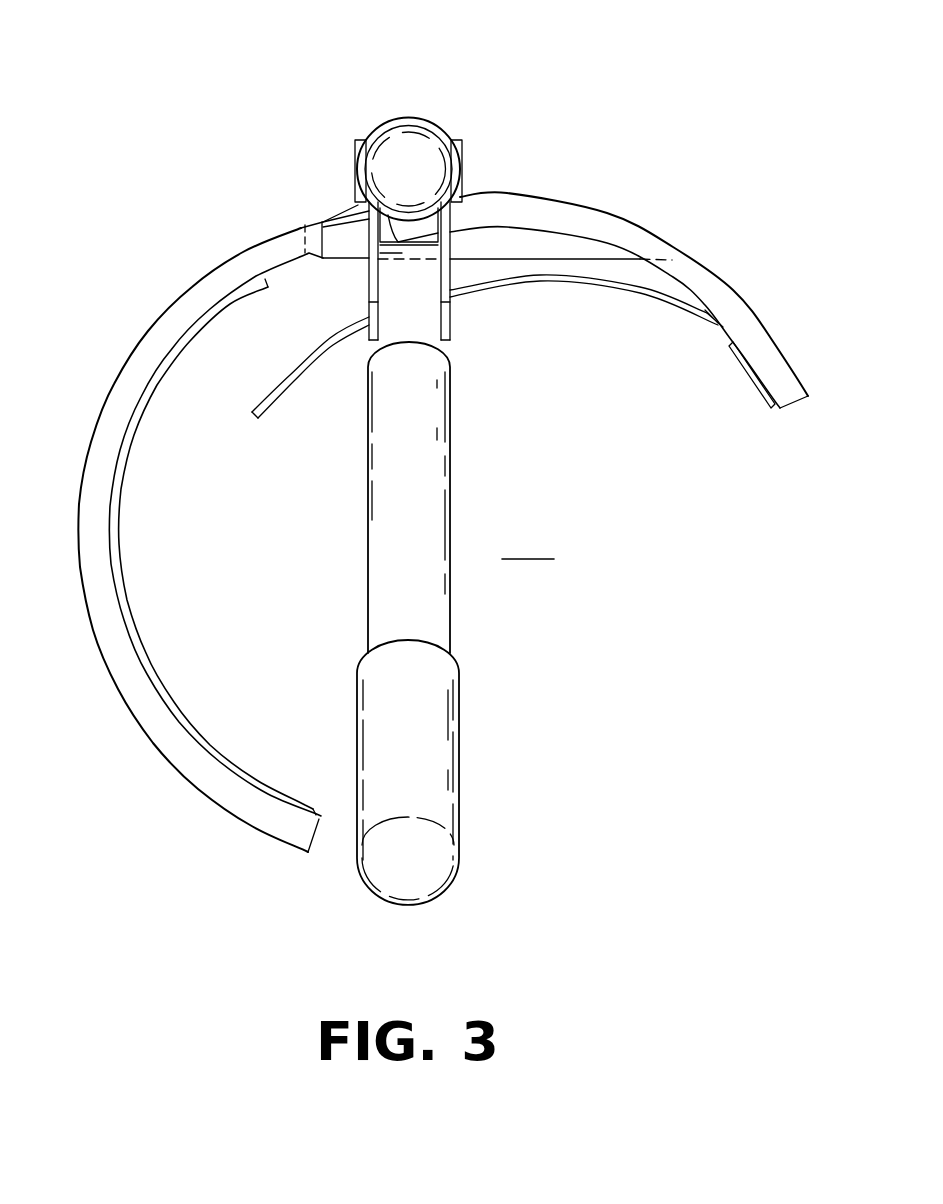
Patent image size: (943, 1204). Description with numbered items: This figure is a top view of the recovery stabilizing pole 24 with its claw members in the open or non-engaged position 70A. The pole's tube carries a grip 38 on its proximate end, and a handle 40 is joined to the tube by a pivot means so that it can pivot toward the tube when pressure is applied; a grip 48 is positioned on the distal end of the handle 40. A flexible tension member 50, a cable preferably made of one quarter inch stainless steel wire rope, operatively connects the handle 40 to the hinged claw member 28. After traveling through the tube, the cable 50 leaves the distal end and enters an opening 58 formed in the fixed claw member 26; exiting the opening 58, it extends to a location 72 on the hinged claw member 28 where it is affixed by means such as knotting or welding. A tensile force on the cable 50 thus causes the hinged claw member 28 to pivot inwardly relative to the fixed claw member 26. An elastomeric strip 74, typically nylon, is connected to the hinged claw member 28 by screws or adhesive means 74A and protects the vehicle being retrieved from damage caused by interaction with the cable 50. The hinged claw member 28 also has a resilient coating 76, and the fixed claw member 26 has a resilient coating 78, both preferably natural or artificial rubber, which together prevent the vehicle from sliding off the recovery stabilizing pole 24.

The recovery stabilizing pole 24 is at (158, 112).
The fixed claw member 26 is at (115, 692).
The hinged claw member 28 is at (806, 397).
The grip 38 is at (383, 127).
The handle 40 is at (369, 513).
The grip 48 is at (459, 733).
The flexible tension member 50 is at (342, 205).
The opening 58 is at (302, 244).
The open or non-engaged position 70A is at (528, 545).
The location 72 is at (672, 260).
The elastomeric strip 74 is at (518, 285).
The adhesive means 74A is at (720, 309).
The resilient coating 76 is at (755, 374).
The resilient coating 78 is at (183, 720).